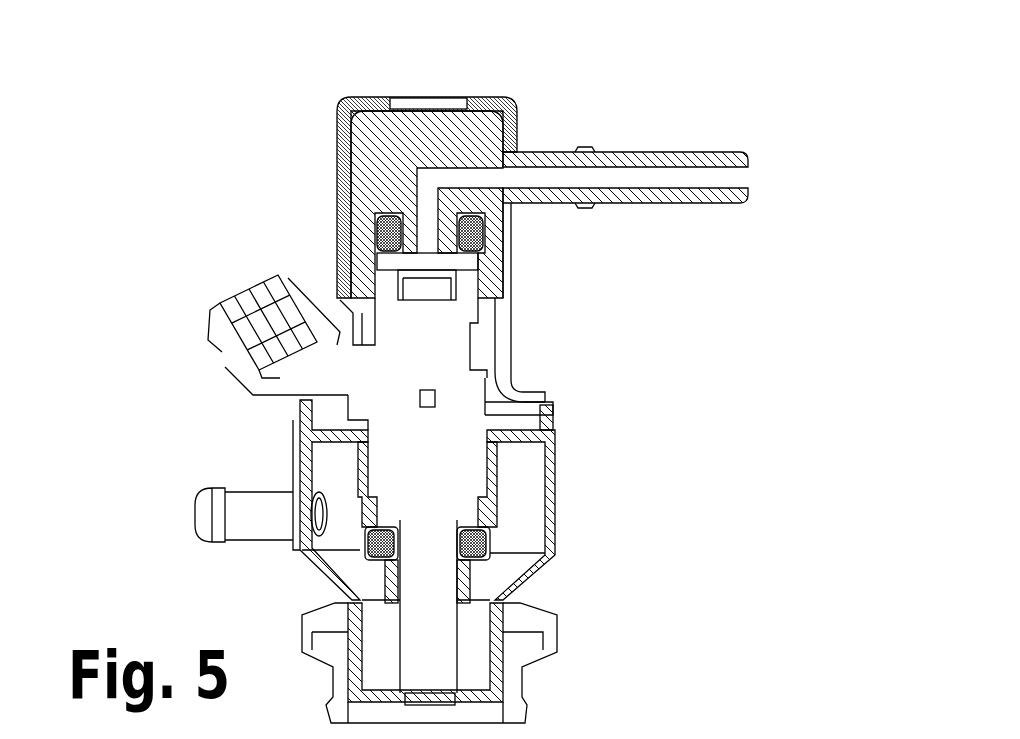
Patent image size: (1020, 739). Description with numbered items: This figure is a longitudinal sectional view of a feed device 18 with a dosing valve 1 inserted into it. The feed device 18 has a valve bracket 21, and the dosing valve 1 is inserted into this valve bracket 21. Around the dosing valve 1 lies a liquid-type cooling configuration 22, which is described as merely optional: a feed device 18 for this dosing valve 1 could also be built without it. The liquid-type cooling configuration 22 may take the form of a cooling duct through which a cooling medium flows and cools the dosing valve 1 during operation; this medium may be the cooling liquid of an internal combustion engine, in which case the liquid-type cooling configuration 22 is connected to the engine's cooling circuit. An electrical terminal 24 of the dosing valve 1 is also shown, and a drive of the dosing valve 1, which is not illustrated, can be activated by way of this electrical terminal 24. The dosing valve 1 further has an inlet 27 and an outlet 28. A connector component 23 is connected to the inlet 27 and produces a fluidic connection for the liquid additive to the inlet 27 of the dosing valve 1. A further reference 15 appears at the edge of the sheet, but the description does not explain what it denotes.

The dosing valve 1 is at (452, 345).
The connector 15 is at (797, 727).
The feed device 18 is at (740, 93).
The valve bracket 21 is at (548, 398).
The liquid-type cooling configuration 22 is at (515, 522).
The connector component 23 is at (377, 133).
The electrical terminal 24 is at (243, 288).
The inlet 27 is at (428, 287).
The outlet 28 is at (427, 704).